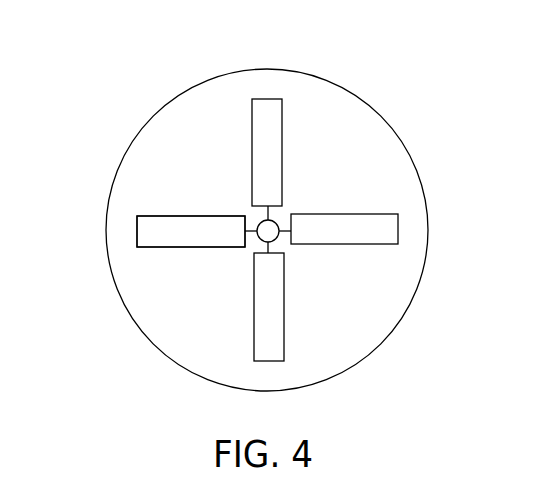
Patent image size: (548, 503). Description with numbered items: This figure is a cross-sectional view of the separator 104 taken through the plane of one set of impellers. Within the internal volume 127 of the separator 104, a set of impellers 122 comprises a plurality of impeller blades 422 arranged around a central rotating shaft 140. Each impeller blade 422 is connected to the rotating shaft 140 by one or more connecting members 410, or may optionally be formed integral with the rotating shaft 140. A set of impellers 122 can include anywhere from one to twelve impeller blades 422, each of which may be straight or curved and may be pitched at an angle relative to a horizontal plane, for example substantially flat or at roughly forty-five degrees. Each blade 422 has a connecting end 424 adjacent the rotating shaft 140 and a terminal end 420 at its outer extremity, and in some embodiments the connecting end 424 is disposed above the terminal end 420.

The separator 104 is at (343, 375).
The internal volume 127 is at (169, 152).
The rotating shaft 140 is at (268, 232).
The connecting end 424 is at (252, 207).
The impeller blade 422 is at (177, 233).
The set of impellers 122 is at (178, 248).
The terminal end 420 is at (398, 214).
The connecting member 410 is at (287, 236).